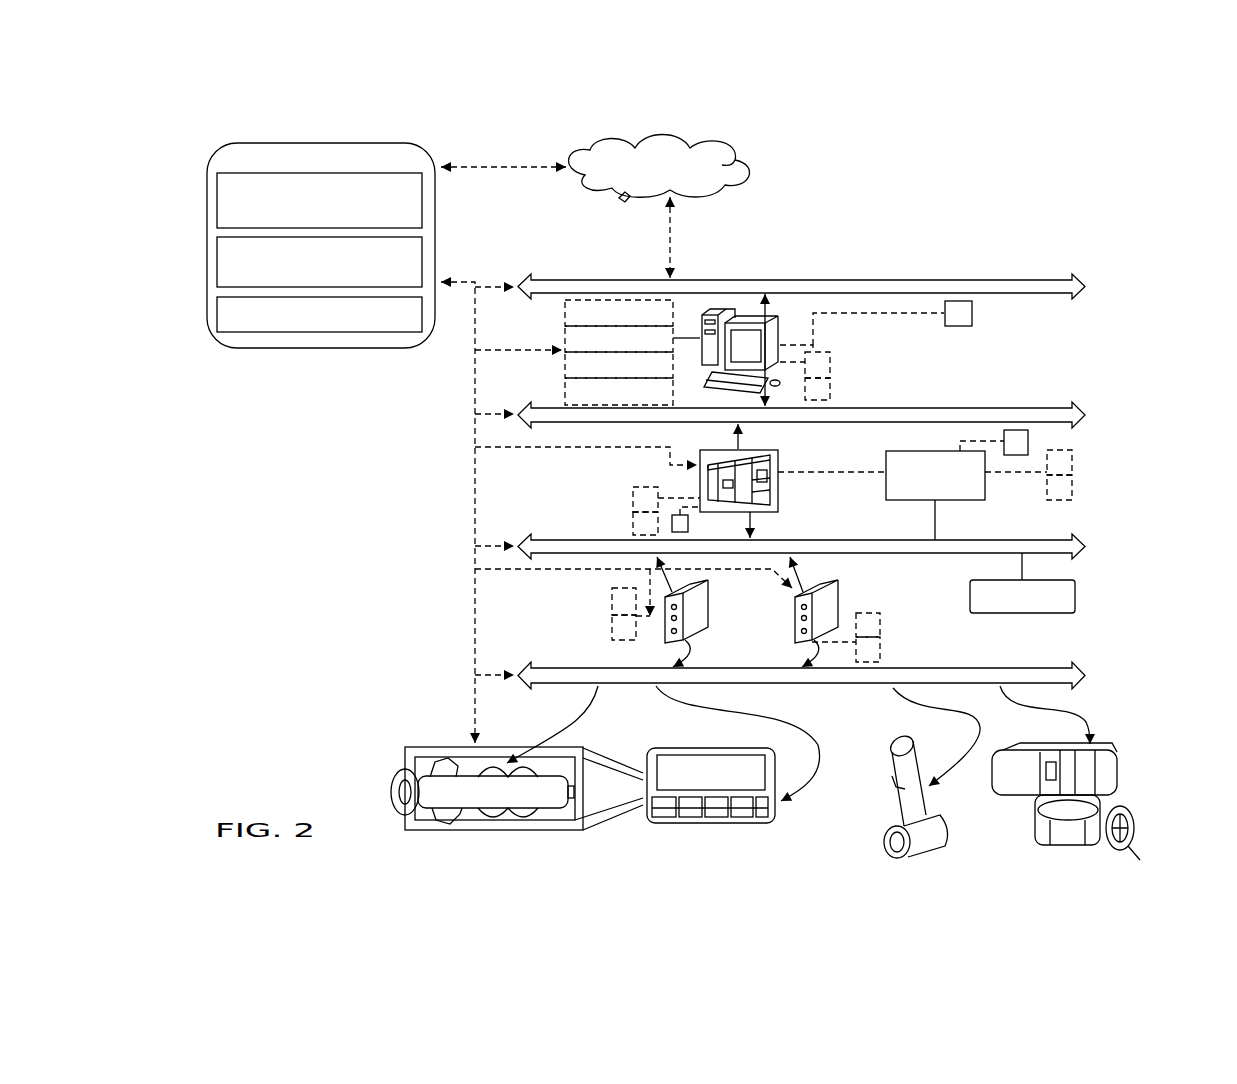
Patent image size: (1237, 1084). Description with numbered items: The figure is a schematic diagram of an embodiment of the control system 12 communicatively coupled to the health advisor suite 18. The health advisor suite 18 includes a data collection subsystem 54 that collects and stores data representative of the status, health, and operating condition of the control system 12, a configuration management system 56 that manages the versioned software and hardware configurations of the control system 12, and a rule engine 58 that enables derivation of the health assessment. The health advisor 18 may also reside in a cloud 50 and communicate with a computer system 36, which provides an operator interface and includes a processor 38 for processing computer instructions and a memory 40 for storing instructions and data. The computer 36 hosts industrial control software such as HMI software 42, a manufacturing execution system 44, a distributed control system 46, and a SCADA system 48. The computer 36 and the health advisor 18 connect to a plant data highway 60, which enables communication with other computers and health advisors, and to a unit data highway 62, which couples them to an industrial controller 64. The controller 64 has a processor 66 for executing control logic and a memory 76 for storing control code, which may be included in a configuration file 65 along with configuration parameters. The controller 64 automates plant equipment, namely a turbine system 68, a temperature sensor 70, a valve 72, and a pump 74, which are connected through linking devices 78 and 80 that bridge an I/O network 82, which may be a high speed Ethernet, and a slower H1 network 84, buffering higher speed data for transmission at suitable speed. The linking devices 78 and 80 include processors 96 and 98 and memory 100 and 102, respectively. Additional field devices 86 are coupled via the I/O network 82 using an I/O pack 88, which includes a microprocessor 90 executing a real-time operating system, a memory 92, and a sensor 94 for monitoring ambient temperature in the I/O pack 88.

The control system 12 is at (1158, 224).
The health advisor suite 18 is at (425, 146).
The computer system 36 is at (786, 340).
The processor 38 is at (818, 352).
The memory 40 is at (831, 389).
The human-machine interface (HMI) software 42 is at (564, 315).
The manufacturing execution system (MES) 44 is at (564, 341).
The distributed control system (DCS) 46 is at (564, 368).
The supervisor control and data acquisition (SCADA) system 48 is at (564, 395).
The cloud 50 is at (740, 178).
The data collection subsystem 54 is at (412, 187).
The configuration management system 56 is at (413, 258).
The rule engine 58 is at (403, 321).
The plant data highway 60 is at (1086, 283).
The unit data highway 62 is at (1086, 412).
The industrial controller 64 is at (778, 461).
The configuration file 65 is at (972, 315).
The processor 66 is at (645, 486).
The turbine system 68 is at (545, 840).
The temperature sensor 70 is at (738, 823).
The valve 72 is at (928, 850).
The pump 74 is at (1140, 843).
The memory 76 is at (633, 524).
The linking device 78 is at (700, 608).
The linking device 80 is at (836, 605).
The I/O network 82 is at (1086, 548).
The H1 network 84 is at (1086, 676).
The field devices 86 is at (1075, 600).
The I/O pack 88 is at (896, 451).
The microprocessor 90 is at (1072, 461).
The memory 92 is at (1072, 490).
The sensor 94 is at (1028, 440).
The processor 96 is at (612, 600).
The processor 98 is at (881, 620).
The memory 100 is at (612, 628).
The memory 102 is at (880, 646).